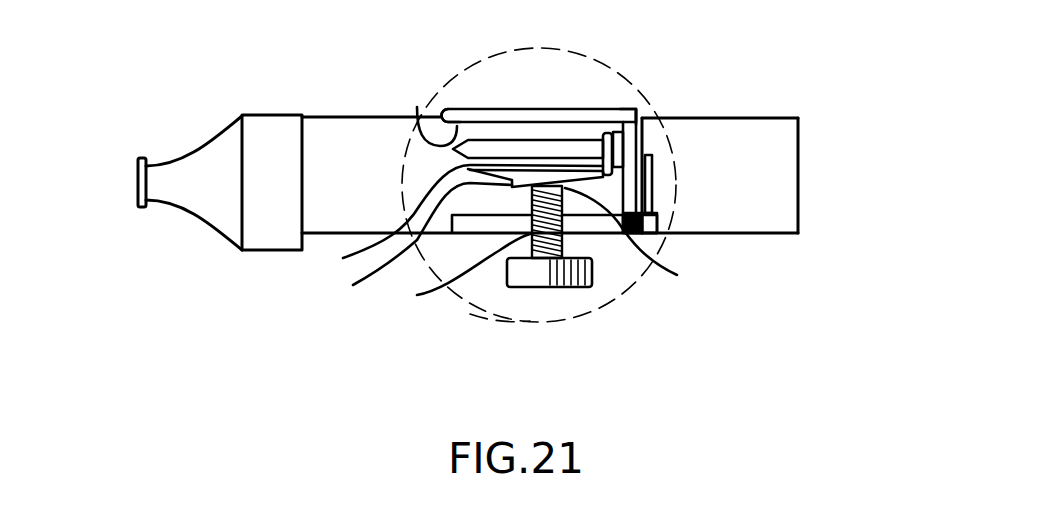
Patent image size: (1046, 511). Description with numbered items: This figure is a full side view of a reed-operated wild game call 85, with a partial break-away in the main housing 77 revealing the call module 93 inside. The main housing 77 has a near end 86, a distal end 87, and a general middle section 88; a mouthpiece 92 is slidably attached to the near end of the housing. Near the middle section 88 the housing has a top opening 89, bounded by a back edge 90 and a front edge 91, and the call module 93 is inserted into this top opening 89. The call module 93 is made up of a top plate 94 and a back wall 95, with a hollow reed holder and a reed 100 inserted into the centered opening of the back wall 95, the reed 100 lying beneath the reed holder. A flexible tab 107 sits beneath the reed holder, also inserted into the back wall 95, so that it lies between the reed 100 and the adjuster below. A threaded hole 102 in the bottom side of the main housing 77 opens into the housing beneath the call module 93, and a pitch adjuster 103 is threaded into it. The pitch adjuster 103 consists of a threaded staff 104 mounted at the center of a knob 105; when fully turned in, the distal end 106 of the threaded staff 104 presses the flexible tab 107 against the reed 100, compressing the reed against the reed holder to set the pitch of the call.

The main housing 77 is at (798, 233).
The wild game call 85 is at (703, 112).
The near end 86 is at (303, 118).
The distal end 87 is at (798, 118).
The middle section 88 is at (547, 320).
The top opening 89 is at (417, 107).
The back edge 90 is at (640, 117).
The front edge 91 is at (438, 114).
The mouthpiece 92 is at (302, 116).
The call module 93 is at (535, 100).
The top plate 94 is at (637, 109).
The back wall 95 is at (630, 210).
The reed 100 is at (738, 140).
The threaded hole 102 is at (453, 276).
The pitch adjuster 103 is at (498, 302).
The threaded staff 104 is at (565, 235).
The knob 105 is at (590, 288).
The distal end 106 is at (648, 240).
The flexible tab 107 is at (413, 247).